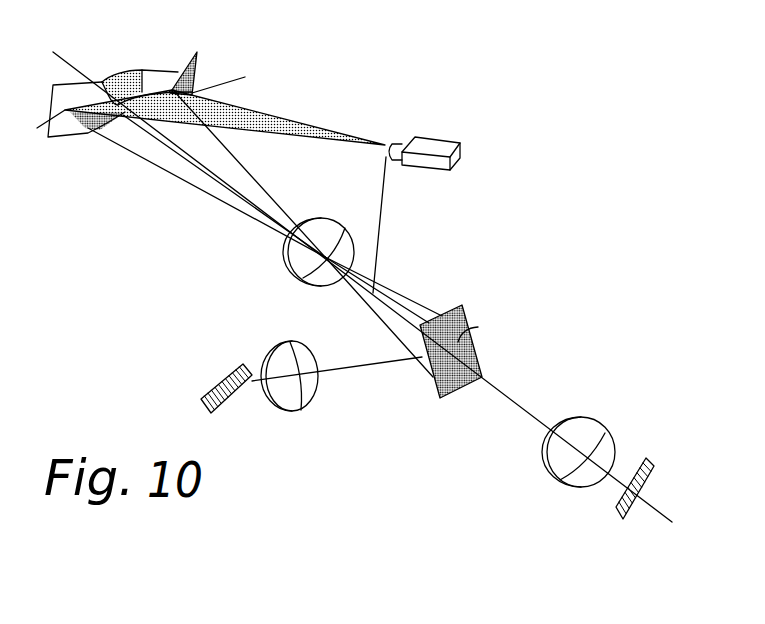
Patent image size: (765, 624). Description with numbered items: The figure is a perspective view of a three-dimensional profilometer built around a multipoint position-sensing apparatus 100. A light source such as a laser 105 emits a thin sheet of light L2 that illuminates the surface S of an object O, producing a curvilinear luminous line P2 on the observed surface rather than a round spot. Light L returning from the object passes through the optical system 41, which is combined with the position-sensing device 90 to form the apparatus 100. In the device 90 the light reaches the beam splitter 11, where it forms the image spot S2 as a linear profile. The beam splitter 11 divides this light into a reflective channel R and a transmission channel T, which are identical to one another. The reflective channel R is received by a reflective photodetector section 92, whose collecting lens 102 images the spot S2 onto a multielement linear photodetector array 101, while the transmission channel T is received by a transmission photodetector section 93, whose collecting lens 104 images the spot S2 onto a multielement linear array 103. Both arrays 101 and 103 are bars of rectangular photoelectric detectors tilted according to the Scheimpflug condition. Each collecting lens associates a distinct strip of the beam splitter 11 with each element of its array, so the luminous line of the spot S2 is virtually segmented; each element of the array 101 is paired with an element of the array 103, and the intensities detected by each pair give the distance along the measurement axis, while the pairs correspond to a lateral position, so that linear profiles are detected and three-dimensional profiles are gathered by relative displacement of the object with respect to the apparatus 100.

The curvilinear luminous line P2 is at (141, 70).
The surface of the object S is at (198, 84).
The thin sheet of light L2 is at (227, 109).
The laser 105 is at (435, 145).
The multipoint position-sensing apparatus 100 is at (537, 243).
The object O is at (78, 139).
The optical system 41 is at (279, 258).
The imaging light rays L is at (400, 307).
The beam splitter 11 is at (465, 315).
The image spot S2 is at (478, 327).
The transmission photodetector section 93 is at (642, 423).
The collecting lens 102 is at (282, 358).
The multielement linear photodetector array 101 is at (210, 393).
The transmission channel T is at (518, 400).
The reflective channel R is at (353, 367).
The reflective photodetector section 92 is at (274, 430).
The position-sensing device 90 is at (478, 422).
The collecting lens 104 is at (587, 477).
The multielement linear array 103 is at (627, 510).